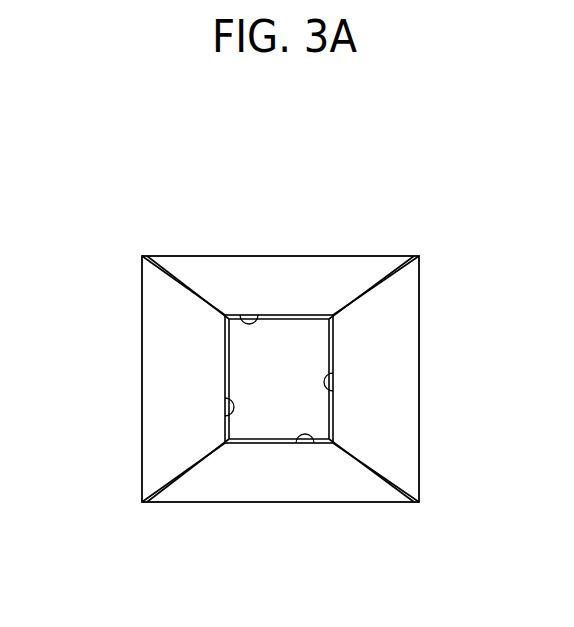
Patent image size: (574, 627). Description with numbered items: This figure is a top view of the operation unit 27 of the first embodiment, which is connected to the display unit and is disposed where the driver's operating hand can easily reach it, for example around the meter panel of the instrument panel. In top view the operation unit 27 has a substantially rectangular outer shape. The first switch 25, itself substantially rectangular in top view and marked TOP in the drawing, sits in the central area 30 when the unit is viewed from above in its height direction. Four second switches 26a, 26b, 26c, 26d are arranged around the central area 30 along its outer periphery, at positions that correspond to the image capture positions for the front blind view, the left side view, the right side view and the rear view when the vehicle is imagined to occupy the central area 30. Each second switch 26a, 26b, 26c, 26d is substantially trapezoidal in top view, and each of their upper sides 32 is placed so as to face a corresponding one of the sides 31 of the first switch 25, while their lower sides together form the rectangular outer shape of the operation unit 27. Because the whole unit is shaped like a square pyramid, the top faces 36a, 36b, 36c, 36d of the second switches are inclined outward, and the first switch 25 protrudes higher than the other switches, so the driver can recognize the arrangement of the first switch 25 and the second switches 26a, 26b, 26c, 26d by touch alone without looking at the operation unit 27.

The operation unit 27 is at (300, 232).
The first switch 25 is at (315, 342).
The central area 30 is at (326, 305).
The sides of the first switch 31 is at (267, 313).
The upper sides of the second switches 32 is at (240, 322).
The second switch 26a is at (335, 268).
The second switch 26b is at (405, 313).
The second switch 26c is at (358, 490).
The second switch 26d is at (157, 315).
The top face of second switch 36a is at (272, 270).
The top face of second switch 36b is at (405, 450).
The top face of second switch 36c is at (205, 490).
The top face of second switch 36d is at (157, 448).